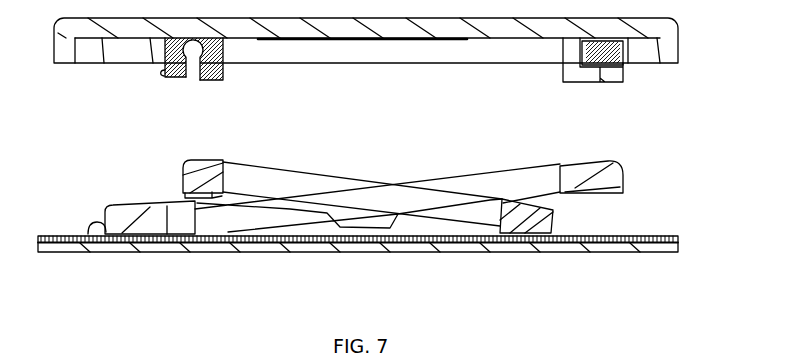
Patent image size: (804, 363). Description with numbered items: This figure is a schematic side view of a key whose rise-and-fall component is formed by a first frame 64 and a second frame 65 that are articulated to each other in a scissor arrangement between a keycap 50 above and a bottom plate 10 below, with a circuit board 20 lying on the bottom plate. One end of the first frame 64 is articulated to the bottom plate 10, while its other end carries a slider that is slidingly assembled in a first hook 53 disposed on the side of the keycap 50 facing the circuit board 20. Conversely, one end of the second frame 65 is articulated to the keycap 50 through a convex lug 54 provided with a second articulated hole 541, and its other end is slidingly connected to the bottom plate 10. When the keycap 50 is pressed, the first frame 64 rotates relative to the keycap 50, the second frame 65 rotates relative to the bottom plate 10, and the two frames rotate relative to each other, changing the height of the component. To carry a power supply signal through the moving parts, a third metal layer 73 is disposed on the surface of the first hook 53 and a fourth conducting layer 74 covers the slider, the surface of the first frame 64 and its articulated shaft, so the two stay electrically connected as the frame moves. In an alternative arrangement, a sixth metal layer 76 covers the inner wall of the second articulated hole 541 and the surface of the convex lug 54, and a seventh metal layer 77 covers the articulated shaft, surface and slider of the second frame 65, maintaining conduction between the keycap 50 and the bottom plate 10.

The bottom plate 10 is at (613, 253).
The circuit board 20 is at (534, 240).
The keycap 50 is at (353, 40).
The first hook 53 is at (576, 72).
The convex lug 54 is at (223, 62).
The second articulated hole 541 is at (193, 58).
The first frame 64 is at (385, 174).
The second frame 65 is at (335, 217).
The third metal layer 73 is at (621, 66).
The fourth conducting layer 74 is at (612, 173).
The sixth metal layer 76 is at (160, 72).
The seventh metal layer 77 is at (180, 176).